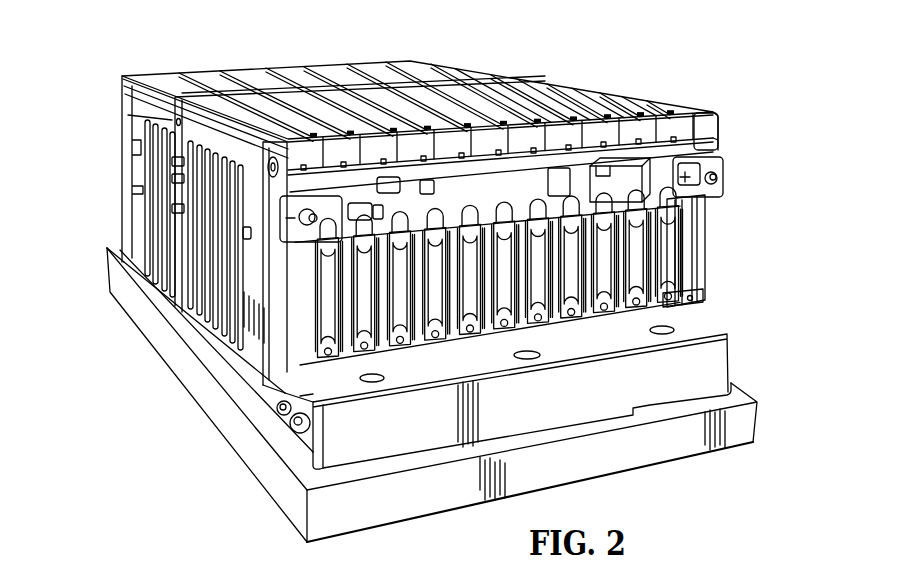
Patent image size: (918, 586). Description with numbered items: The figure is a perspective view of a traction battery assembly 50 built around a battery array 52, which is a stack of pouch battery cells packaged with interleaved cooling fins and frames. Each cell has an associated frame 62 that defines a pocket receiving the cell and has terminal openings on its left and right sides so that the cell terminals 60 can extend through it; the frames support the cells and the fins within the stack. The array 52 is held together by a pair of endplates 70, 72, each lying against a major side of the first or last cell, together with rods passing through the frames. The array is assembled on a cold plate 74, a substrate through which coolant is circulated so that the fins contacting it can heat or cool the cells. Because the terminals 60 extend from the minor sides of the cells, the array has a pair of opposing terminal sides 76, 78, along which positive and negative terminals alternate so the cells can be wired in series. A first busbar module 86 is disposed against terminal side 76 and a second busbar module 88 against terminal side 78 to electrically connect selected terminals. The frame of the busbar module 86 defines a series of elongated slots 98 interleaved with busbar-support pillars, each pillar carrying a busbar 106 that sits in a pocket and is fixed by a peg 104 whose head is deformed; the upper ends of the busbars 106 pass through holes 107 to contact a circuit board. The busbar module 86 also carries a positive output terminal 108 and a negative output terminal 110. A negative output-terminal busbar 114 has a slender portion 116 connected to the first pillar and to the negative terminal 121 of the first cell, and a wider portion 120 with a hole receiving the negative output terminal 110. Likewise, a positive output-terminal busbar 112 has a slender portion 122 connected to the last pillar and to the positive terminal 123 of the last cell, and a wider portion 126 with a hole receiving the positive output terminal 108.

The traction battery assembly 50 is at (614, 54).
The battery array 52 is at (238, 82).
The terminals 60 is at (293, 335).
The frame 62 is at (628, 108).
The endplate 70 is at (222, 317).
The endplate 72 is at (720, 127).
The cold plate 74 is at (207, 415).
The terminal side 76 is at (722, 248).
The terminal side 78 is at (112, 165).
The busbar module 86 is at (473, 200).
The second busbar module 88 is at (120, 113).
The slots 98 is at (352, 272).
The peg 104 is at (703, 305).
The busbar 106 is at (325, 400).
The holes 107 is at (405, 232).
The positive output terminal 108 is at (714, 160).
The negative output terminal 110 is at (212, 402).
The positive output-terminal busbar 112 is at (713, 188).
The negative output-terminal busbar 114 is at (296, 197).
The slender portion 116 is at (300, 240).
The wider portion 120 is at (300, 238).
The negative terminal of the first cell 121 is at (296, 434).
The slender portion 122 is at (703, 290).
The positive terminal of the last cell 123 is at (693, 230).
The wider portion 126 is at (693, 165).